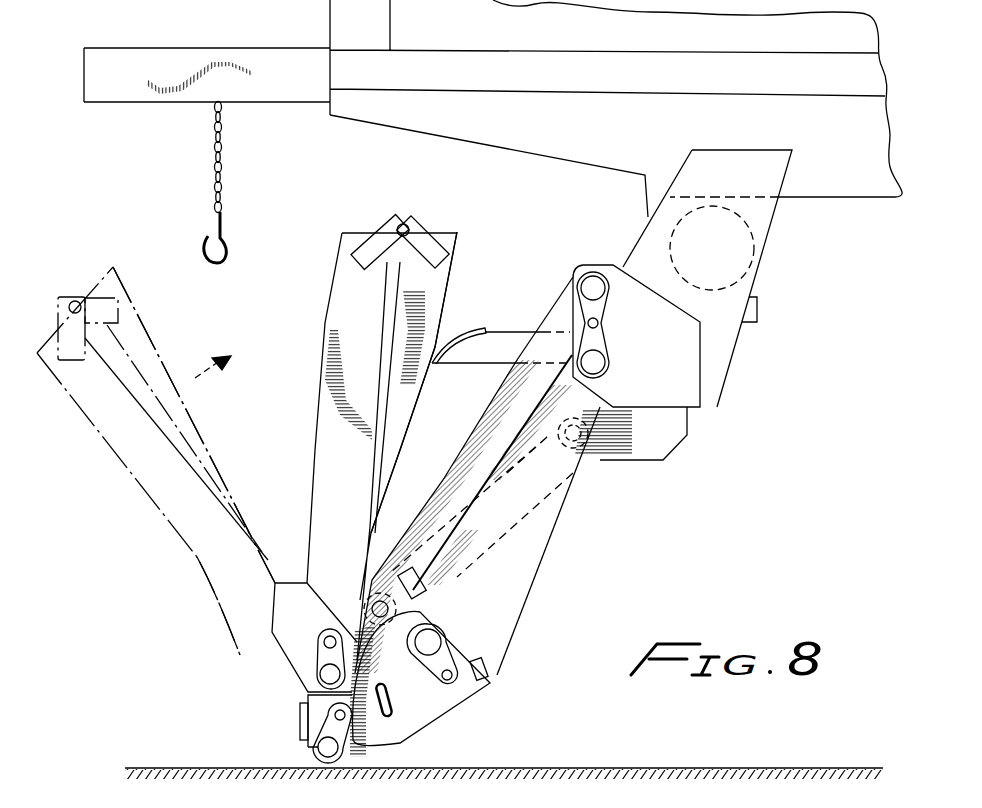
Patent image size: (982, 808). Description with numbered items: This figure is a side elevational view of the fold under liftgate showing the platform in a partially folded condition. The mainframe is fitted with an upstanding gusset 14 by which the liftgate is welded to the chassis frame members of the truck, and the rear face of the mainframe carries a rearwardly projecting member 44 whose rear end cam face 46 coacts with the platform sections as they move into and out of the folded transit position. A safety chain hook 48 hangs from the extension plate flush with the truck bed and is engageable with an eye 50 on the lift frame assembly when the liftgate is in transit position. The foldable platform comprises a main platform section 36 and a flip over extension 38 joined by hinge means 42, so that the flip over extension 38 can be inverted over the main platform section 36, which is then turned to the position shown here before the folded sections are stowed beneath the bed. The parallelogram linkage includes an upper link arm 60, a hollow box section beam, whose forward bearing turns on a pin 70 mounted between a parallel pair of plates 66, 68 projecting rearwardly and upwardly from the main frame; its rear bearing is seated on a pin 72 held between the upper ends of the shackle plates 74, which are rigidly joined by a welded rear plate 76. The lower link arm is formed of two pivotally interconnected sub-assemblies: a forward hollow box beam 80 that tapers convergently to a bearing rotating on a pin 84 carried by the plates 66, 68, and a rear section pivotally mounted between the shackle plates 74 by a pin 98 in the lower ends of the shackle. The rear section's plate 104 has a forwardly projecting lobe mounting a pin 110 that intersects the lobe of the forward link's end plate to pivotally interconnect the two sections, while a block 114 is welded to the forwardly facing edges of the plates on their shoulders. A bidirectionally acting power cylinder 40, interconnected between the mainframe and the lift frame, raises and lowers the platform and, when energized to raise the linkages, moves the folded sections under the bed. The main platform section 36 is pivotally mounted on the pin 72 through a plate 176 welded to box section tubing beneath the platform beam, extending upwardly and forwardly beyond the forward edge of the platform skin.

The gussets 14 is at (767, 153).
The main platform section 36 is at (340, 312).
The flip over extension 38 is at (403, 400).
The power cylinder 40 is at (527, 512).
The hinge means 42 is at (405, 224).
The rearwardly projecting members 44 is at (523, 332).
The cam faces 46 is at (467, 328).
The safety chain hook 48 is at (213, 148).
The eye 50 is at (387, 697).
The upper link arm 60 is at (480, 442).
The plate 66 is at (683, 383).
The plate 68 is at (673, 430).
The pin 70 is at (594, 280).
The pin 72 is at (330, 673).
The shackle plates 74 is at (317, 713).
The rear plate 76 is at (299, 727).
The hollow box beam 80 is at (512, 540).
The pin 84 is at (598, 362).
The pin 98 is at (318, 748).
The plate 104 is at (410, 727).
The pin 110 is at (428, 642).
The block 114 is at (492, 677).
The plate 176 is at (272, 630).